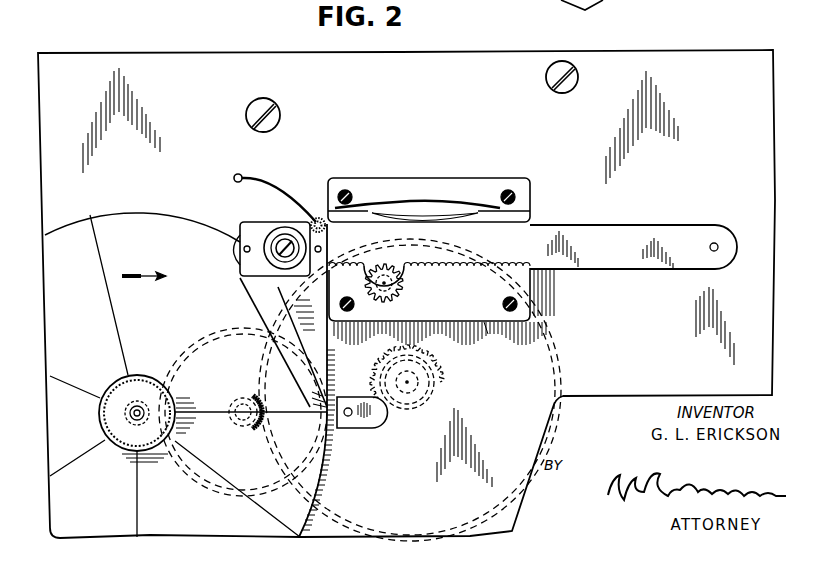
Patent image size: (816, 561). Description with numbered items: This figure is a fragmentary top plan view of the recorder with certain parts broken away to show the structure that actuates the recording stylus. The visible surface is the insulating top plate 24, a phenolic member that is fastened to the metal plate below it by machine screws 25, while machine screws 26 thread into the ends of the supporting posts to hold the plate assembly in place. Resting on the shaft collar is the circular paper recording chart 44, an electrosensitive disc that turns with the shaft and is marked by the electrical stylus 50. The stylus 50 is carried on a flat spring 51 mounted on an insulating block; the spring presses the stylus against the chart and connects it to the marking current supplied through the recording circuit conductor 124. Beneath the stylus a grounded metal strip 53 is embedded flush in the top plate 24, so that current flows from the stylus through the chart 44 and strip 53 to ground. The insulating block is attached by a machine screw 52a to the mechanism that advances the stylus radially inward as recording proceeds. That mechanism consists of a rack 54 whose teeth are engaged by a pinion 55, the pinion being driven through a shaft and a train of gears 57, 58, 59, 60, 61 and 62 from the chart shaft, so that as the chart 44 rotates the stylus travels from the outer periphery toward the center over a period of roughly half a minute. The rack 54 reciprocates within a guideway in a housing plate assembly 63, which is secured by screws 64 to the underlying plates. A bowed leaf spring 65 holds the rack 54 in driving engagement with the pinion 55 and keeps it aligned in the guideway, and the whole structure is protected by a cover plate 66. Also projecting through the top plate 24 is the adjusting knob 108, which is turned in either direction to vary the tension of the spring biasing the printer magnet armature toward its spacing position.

The top plate 24 is at (445, 70).
The machine screws 25 is at (579, 77).
The machine screws 26 is at (281, 115).
The recording chart 44 is at (133, 230).
The flat spring 51 is at (245, 232).
The machine screw 52a is at (285, 242).
The recording circuit conductor 124 is at (282, 192).
The electrical stylus 50 is at (335, 389).
The grounded metal strip 53 is at (375, 408).
The cover plate 66 is at (435, 185).
The bowed leaf spring 65 is at (388, 222).
The rack 54 is at (499, 254).
The pinion 55 is at (394, 284).
The screws 64 is at (353, 192).
The housing plate assembly 63 is at (484, 325).
The gear 59 is at (556, 345).
The gear 58 is at (434, 383).
The gear 57 is at (430, 347).
The gear 60 is at (242, 402).
The gear 61 is at (223, 488).
The gear 62 is at (158, 372).
The adjusting knob 108 is at (137, 374).